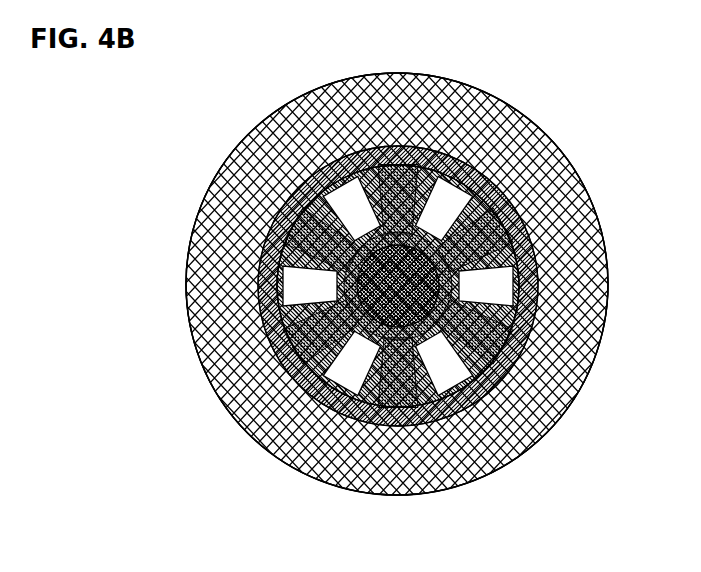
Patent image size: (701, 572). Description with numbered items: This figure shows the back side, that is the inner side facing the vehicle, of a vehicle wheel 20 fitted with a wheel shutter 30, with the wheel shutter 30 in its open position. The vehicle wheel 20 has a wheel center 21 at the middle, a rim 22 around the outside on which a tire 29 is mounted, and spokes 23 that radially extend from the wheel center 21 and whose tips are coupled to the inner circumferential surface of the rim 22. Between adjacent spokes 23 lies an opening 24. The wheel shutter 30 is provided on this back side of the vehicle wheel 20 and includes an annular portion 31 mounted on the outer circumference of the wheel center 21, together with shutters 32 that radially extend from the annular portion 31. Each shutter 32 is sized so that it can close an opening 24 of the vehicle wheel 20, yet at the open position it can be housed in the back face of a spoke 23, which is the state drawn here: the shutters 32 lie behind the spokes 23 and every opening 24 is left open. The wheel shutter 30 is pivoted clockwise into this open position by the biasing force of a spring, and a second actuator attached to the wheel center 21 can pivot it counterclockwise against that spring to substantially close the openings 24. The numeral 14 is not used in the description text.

The housing body 14 is at (293, 144).
The vehicle wheel 20 is at (516, 197).
The wheel center 21 is at (398, 422).
The rim 22 is at (270, 417).
The spokes 23 is at (240, 345).
The opening 24 is at (308, 287).
The tire 29 is at (536, 130).
The wheel shutter 30 is at (523, 226).
The annular portion 31 is at (420, 330).
The shutters 32 is at (510, 342).